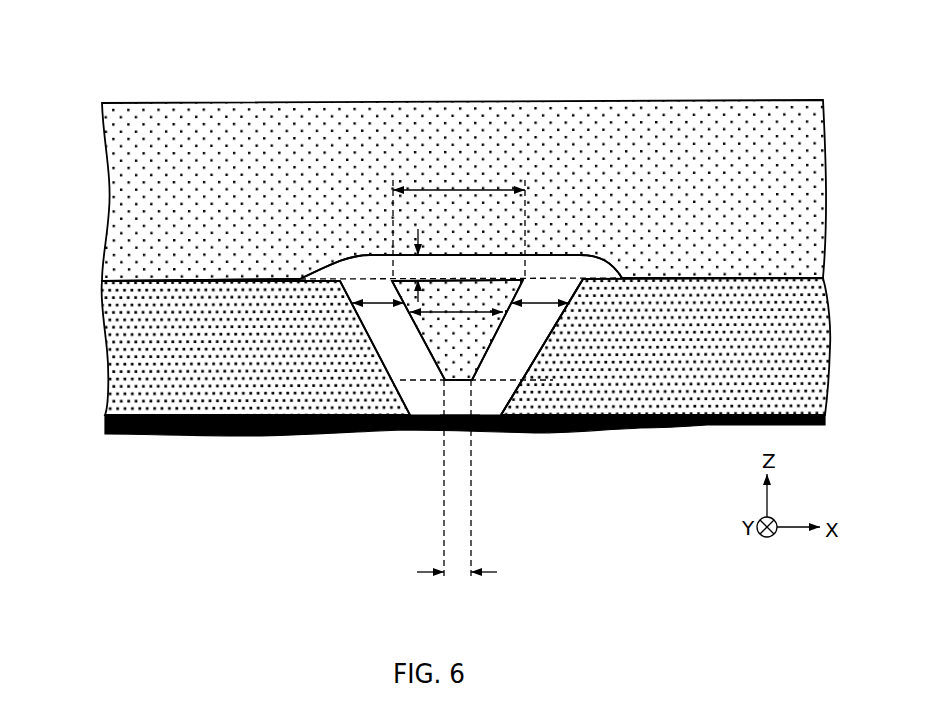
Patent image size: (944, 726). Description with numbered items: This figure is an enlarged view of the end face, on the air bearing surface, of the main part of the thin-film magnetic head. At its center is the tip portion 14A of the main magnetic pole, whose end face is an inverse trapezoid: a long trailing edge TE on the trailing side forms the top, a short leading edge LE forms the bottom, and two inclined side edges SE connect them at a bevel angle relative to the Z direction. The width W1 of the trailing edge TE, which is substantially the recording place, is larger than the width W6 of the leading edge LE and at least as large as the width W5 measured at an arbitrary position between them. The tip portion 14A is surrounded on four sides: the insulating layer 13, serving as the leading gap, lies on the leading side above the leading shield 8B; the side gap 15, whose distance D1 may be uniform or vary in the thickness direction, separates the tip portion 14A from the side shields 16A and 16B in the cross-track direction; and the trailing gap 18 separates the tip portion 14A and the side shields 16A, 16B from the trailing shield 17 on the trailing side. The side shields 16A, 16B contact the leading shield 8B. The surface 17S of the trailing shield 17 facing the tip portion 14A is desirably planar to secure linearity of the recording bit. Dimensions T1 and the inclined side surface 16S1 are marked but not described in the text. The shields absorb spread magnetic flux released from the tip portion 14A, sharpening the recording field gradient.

The trailing shield 17 is at (770, 104).
The surface of the trailing shield facing the tip portion and side shields 17S is at (365, 260).
The trailing gap 18 is at (447, 270).
The inclined side surface 16S1 is at (570, 296).
The side shield 16A is at (247, 360).
The side shield 16B is at (697, 382).
The leading shield 8B is at (135, 433).
The tip portion 14A is at (463, 381).
The side gap 15 is at (405, 357).
The insulating layer 13 is at (465, 432).
The side edge SE is at (419, 335).
The leading edge LE is at (459, 381).
The trailing edge TE is at (491, 276).
The width of the trailing edge W1 is at (485, 189).
The width at an arbitrary position W5 is at (456, 298).
The width of the leading edge W6 is at (457, 492).
The thickness T1 is at (415, 253).
The distance of the side gap D1 is at (460, 320).